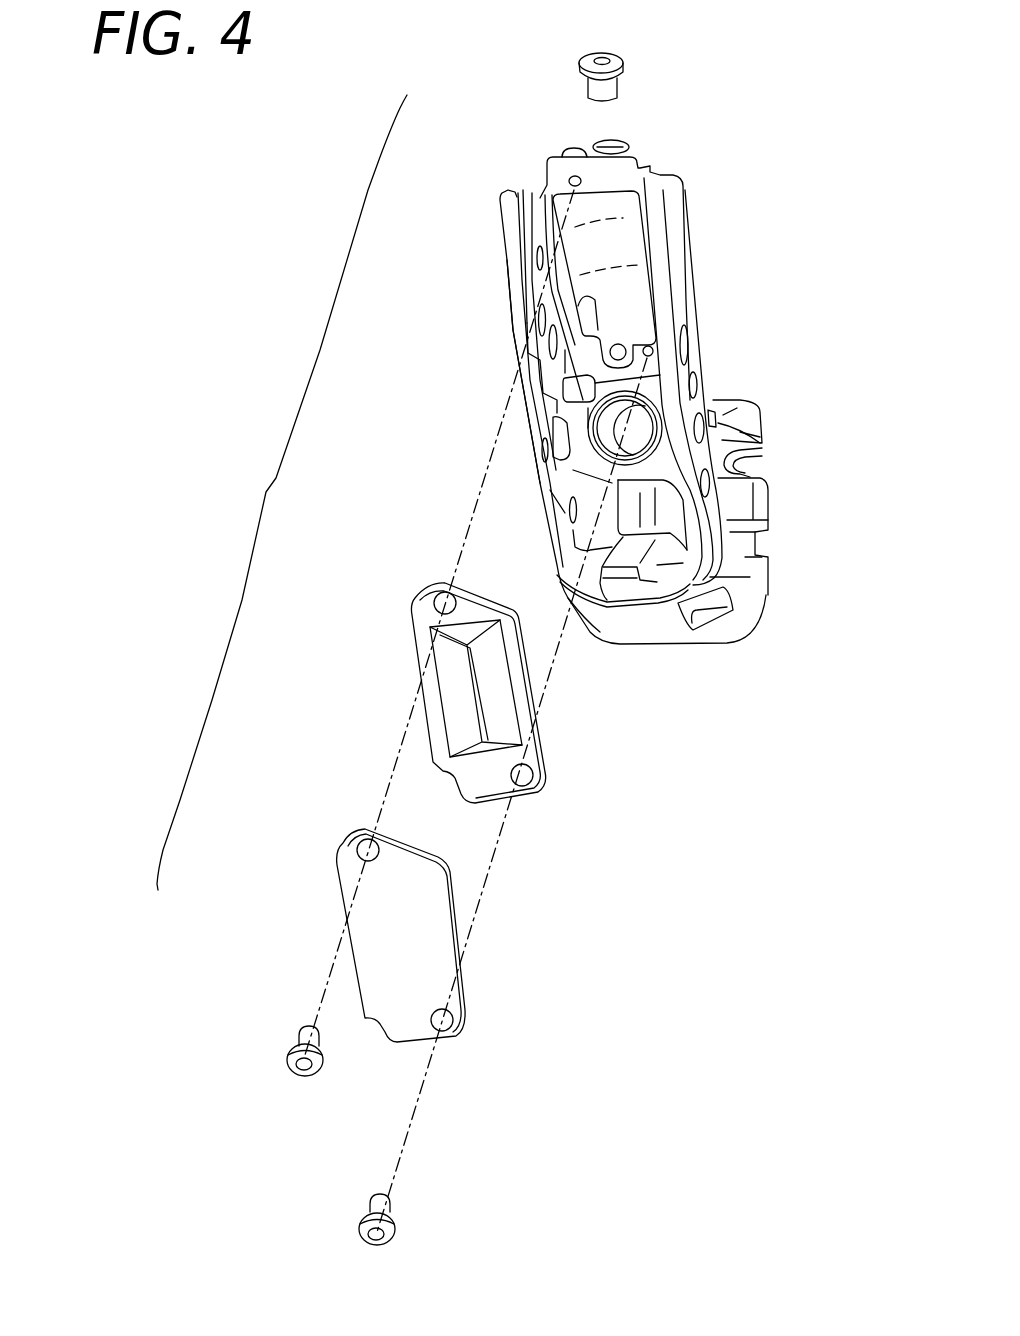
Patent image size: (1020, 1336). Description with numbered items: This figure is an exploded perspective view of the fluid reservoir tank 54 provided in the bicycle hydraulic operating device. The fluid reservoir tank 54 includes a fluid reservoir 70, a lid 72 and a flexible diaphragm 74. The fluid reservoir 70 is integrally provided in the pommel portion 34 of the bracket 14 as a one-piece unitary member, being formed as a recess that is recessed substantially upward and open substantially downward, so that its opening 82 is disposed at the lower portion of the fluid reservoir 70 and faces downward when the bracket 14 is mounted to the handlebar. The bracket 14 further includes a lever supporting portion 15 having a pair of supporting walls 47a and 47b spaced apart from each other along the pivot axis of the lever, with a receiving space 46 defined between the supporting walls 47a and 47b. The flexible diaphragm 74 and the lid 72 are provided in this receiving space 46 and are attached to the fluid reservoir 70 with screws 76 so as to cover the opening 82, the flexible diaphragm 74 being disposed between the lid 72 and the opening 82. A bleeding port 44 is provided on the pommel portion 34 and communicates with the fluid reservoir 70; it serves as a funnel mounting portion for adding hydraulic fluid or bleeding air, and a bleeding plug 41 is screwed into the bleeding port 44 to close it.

The bracket 14 is at (705, 346).
The lever supporting portion 15 is at (503, 348).
The pommel portion 34 is at (506, 193).
The bleeding plug 41 is at (625, 68).
The bleeding port 44 is at (605, 142).
The receiving space 46 is at (550, 197).
The supporting wall 47a is at (510, 330).
The supporting wall 47b is at (660, 277).
The fluid reservoir tank 54 is at (282, 492).
The fluid reservoir 70 is at (598, 197).
The lid 72 is at (332, 866).
The flexible diaphragm 74 is at (406, 620).
The screws 76 is at (312, 1063).
The opening 82 is at (630, 225).